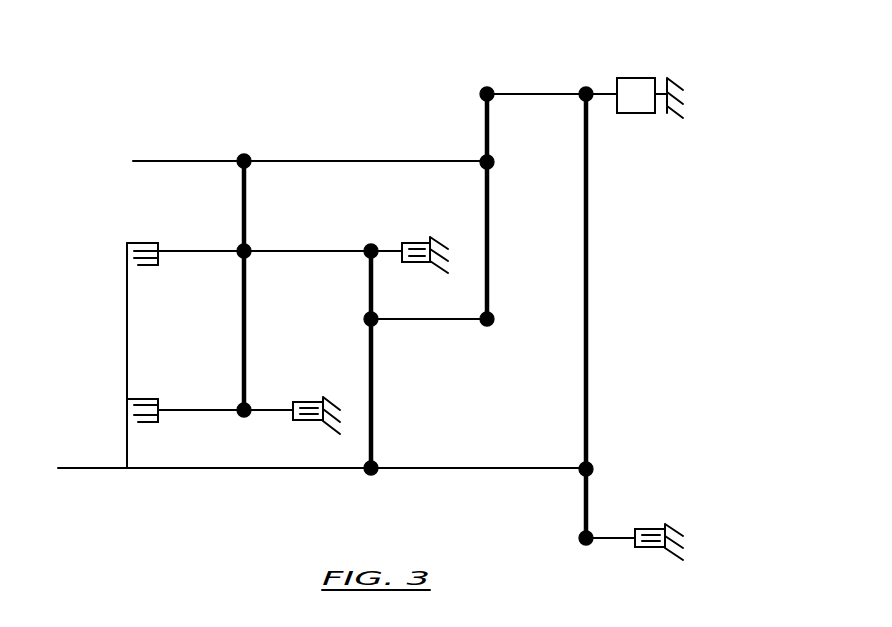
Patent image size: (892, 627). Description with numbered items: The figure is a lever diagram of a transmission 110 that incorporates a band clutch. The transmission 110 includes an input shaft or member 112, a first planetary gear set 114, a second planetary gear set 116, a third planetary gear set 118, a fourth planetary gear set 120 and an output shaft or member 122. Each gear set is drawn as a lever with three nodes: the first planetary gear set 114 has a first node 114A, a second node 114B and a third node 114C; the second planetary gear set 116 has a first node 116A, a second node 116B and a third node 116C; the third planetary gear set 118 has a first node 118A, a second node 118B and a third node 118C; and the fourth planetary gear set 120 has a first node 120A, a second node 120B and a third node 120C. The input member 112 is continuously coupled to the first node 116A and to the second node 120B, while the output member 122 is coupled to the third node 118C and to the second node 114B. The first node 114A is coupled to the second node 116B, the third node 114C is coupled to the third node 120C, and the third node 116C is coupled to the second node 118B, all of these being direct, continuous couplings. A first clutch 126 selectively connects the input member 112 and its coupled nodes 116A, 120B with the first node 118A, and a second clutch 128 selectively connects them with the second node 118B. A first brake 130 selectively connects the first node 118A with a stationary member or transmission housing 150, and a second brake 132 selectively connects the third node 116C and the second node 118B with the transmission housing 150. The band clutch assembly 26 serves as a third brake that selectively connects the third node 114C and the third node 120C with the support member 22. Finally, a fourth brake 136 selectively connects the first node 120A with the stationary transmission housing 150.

The transmission 110 is at (702, 80).
The input shaft or member 112 is at (73, 470).
The output shaft or member 122 is at (178, 163).
The first planetary gear set 114 is at (460, 102).
The first node of first planetary gear set 114A is at (482, 326).
The second node of first planetary gear set 114B is at (495, 164).
The third node of first planetary gear set 114C is at (490, 88).
The second planetary gear set 116 is at (378, 234).
The first node of second planetary gear set 116A is at (368, 478).
The second node of second planetary gear set 116B is at (362, 320).
The third node of second planetary gear set 116C is at (366, 245).
The third planetary gear set 118 is at (228, 146).
The first node of third planetary gear set 118A is at (242, 418).
The second node of third planetary gear set 118B is at (252, 246).
The third node of third planetary gear set 118C is at (247, 154).
The fourth planetary gear set 120 is at (598, 76).
The first node of fourth planetary gear set 120A is at (578, 540).
The second node of fourth planetary gear set 120B is at (595, 470).
The third node of fourth planetary gear set 120C is at (580, 88).
The first clutch 126 is at (146, 397).
The second clutch 128 is at (146, 241).
The first brake 130 is at (306, 400).
The second brake 132 is at (415, 266).
The fourth brake 136 is at (648, 550).
The stationary member or transmission housing 150 is at (334, 432).
The band clutch assembly 26 is at (637, 115).
The support member 22 is at (674, 116).